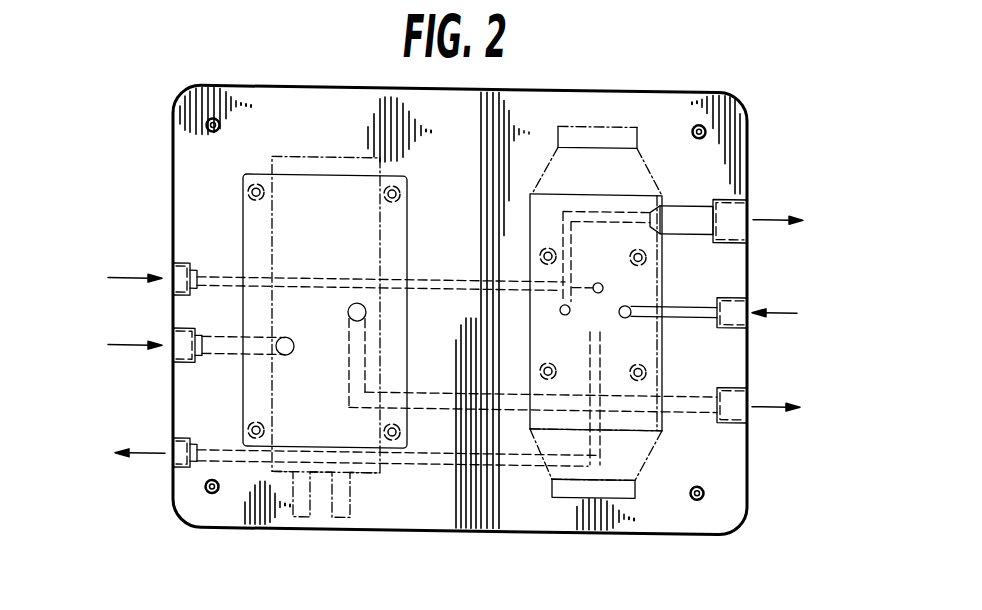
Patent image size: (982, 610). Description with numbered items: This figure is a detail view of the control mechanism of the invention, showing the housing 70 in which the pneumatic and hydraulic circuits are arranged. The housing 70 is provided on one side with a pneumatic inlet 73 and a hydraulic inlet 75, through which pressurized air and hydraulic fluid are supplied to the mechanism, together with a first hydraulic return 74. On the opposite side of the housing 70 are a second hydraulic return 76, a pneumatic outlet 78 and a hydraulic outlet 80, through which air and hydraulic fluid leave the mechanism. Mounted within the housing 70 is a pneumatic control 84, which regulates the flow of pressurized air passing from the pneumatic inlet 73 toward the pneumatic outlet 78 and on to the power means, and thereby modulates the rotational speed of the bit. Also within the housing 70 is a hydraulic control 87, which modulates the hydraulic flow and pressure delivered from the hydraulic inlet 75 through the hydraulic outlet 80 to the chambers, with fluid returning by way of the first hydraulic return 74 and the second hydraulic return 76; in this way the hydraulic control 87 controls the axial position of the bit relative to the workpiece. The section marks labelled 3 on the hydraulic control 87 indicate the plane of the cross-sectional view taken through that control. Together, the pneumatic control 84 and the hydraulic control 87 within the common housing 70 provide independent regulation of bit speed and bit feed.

The housing 70 is at (385, 503).
The pneumatic inlet 73 is at (177, 527).
The first hydraulic return 74 is at (186, 376).
The hydraulic inlet 75 is at (185, 269).
The second hydraulic return 76 is at (725, 314).
The pneumatic outlet 78 is at (730, 416).
The hydraulic outlet 80 is at (730, 201).
The pneumatic control 84 is at (303, 165).
The hydraulic control 87 is at (592, 135).
The section line 3- 3 is at (567, 303).